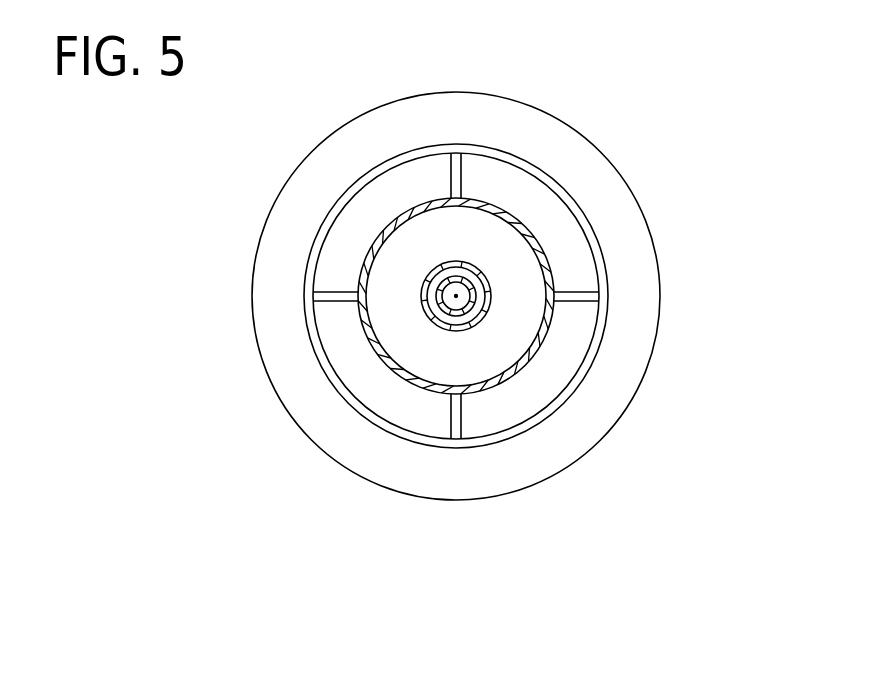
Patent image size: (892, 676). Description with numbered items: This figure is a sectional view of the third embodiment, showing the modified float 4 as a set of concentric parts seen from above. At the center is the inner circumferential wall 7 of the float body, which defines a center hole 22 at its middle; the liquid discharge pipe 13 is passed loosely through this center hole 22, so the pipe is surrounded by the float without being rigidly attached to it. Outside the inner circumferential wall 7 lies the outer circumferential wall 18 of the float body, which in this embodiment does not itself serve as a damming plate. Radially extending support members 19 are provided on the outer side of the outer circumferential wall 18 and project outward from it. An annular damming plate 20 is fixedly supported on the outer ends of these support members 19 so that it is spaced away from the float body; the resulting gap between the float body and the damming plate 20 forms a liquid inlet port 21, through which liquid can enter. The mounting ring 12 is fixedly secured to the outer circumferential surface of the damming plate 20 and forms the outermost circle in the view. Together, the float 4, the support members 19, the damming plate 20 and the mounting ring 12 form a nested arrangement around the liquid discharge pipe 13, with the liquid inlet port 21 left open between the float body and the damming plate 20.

The mounting ring 12 is at (290, 223).
The annular damming plate 20 is at (595, 220).
The liquid inlet port 21 is at (552, 372).
The support members 19 is at (573, 285).
The outer circumferential wall 18 is at (360, 333).
The float 4 is at (534, 228).
The inner circumferential wall 7 is at (430, 320).
The center hole 22 is at (470, 318).
The liquid discharge pipe 13 is at (453, 313).